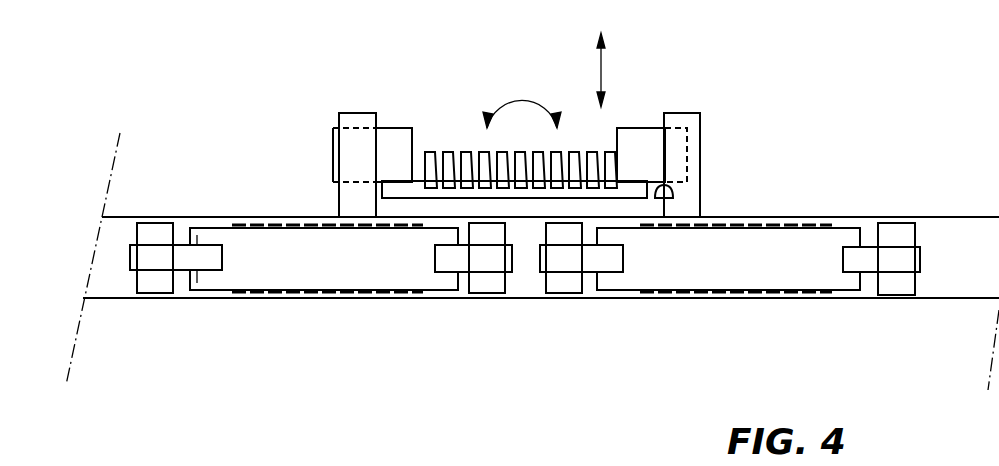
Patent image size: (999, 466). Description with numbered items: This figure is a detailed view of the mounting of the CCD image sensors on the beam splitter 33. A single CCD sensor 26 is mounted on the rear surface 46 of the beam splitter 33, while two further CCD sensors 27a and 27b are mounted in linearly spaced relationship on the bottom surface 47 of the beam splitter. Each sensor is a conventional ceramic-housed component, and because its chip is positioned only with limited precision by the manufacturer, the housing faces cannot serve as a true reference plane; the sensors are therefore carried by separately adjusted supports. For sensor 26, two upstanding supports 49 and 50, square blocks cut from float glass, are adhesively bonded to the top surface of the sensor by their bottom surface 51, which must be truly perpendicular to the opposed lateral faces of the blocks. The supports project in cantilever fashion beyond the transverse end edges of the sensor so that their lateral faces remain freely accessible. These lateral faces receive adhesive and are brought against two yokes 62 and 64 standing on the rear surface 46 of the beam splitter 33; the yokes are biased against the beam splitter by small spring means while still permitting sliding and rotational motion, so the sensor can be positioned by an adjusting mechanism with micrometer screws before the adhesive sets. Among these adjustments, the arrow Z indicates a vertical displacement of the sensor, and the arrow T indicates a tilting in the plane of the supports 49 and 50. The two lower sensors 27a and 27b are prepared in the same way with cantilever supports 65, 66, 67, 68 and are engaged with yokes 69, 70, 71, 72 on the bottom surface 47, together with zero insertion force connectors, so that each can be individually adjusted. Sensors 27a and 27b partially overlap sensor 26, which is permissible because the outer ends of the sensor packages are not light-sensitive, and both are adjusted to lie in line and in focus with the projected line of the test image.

The CCD sensor 26 is at (410, 190).
The CCD sensor 27a is at (345, 257).
The CCD sensor 27b is at (750, 262).
The beam splitter 33 is at (265, 208).
The rear surface 46 is at (867, 216).
The bottom surface 47 is at (965, 240).
The upstanding support 49 is at (388, 137).
The upstanding support 50 is at (640, 140).
The bottom surface 51 is at (673, 202).
The yoke 62 is at (355, 117).
The yoke 64 is at (683, 118).
The cantilever support 65 is at (183, 257).
The cantilever support 66 is at (445, 260).
The cantilever support 67 is at (610, 262).
The cantilever support 68 is at (857, 262).
The yoke 69 is at (153, 283).
The yoke 70 is at (488, 283).
The yoke 71 is at (565, 284).
The yoke 72 is at (898, 282).
The tilting adjustment T is at (524, 90).
The vertical displacement Z is at (606, 67).